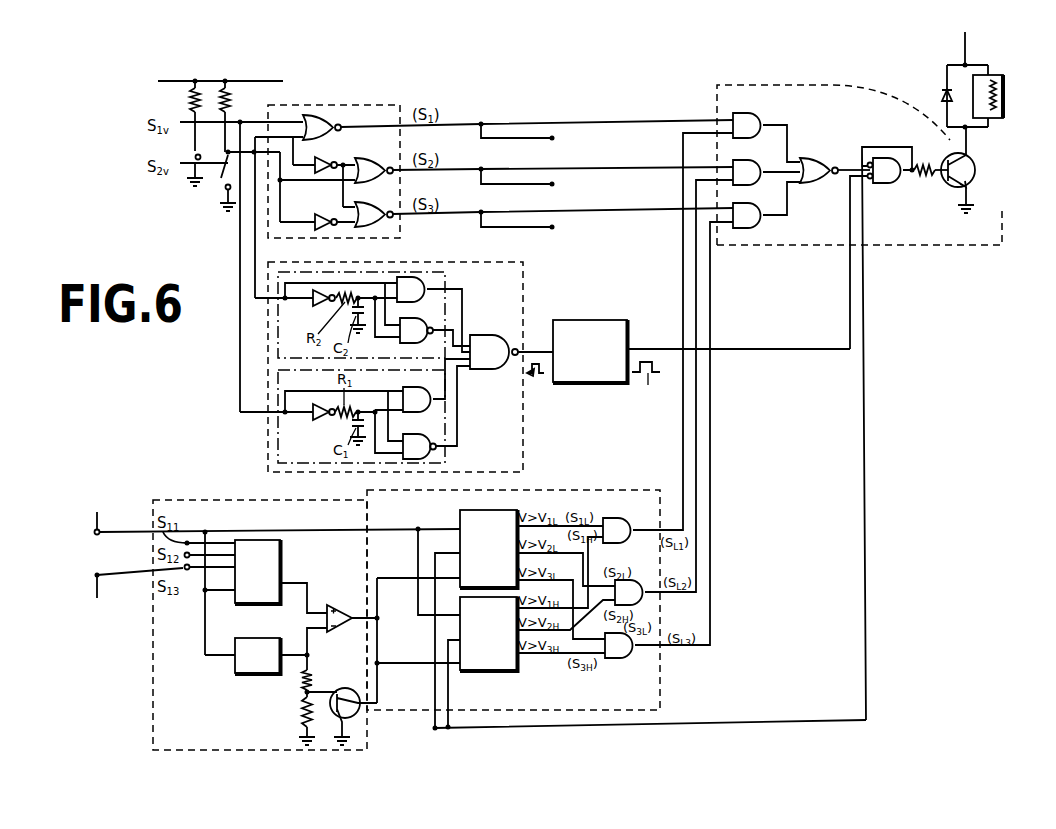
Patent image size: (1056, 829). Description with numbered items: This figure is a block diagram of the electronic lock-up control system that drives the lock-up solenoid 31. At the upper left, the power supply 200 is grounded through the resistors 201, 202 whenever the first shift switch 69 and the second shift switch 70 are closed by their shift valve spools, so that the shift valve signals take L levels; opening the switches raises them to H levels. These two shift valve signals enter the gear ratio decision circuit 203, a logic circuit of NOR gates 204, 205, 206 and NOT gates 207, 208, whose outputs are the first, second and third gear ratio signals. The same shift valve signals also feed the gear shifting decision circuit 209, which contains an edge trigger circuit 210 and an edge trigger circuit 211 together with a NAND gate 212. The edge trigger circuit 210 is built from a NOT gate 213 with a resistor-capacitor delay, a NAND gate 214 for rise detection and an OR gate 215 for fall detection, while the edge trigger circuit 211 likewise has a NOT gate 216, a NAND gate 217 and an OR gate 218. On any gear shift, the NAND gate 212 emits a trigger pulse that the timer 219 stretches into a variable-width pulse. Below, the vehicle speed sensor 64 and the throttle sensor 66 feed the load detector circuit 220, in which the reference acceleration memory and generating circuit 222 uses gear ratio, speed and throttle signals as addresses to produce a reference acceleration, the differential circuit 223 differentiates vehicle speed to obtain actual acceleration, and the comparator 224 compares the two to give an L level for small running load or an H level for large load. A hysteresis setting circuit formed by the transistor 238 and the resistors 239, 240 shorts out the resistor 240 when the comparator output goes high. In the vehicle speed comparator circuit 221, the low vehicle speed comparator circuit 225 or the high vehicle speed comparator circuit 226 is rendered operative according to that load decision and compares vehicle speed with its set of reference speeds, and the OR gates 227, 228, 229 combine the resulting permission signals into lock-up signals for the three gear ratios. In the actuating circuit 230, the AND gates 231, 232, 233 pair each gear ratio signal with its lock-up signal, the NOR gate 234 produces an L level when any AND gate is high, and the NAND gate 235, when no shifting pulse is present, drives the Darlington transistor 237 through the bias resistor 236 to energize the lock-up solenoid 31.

The lock-up solenoid 31 is at (1006, 95).
The vehicle speed sensor 64 is at (271, 514).
The throttle sensor 66 is at (133, 589).
The 1-2 shift switch 69 is at (192, 152).
The 2-3 shift switch 70 is at (220, 180).
The power supply 200 is at (220, 70).
The resistor 201 is at (190, 98).
The resistor 202 is at (232, 101).
The gear ratio decision circuit 203 is at (335, 146).
The NOR gate 204 is at (440, 158).
The NOR gate 205 is at (380, 158).
The NOR gate 206 is at (395, 226).
The NOT gate 207 is at (337, 137).
The NOT gate 208 is at (326, 193).
The gear shifting decision circuit 209 is at (525, 263).
The edge trigger circuit 210 is at (447, 456).
The edge trigger circuit 211 is at (447, 312).
The NAND gate 212 is at (490, 370).
The NOT gate 213 is at (322, 420).
The NAND gate 214 is at (433, 427).
The OR gate 215 is at (433, 380).
The NOT gate 216 is at (318, 306).
The NAND gate 217 is at (445, 329).
The OR gate 218 is at (430, 280).
The timer 219 is at (590, 383).
The load detector circuit 220 is at (205, 499).
The vehicle speed comparator circuit 221 is at (627, 488).
The reference acceleration memory and generating circuit 222 is at (282, 549).
The differential circuit 223 is at (242, 674).
The comparator 224 is at (345, 633).
The low vehicle speed comparator circuit 225 is at (514, 510).
The high vehicle speed comparator circuit 226 is at (519, 665).
The OR gate 227 is at (605, 522).
The OR gate 228 is at (648, 598).
The OR gate 229 is at (623, 658).
The actuating circuit 230 is at (918, 246).
The AND gate 231 is at (763, 116).
The AND gate 232 is at (766, 162).
The AND gate 233 is at (765, 226).
The NOR gate 234 is at (823, 158).
The NAND gate 235 is at (890, 185).
The bias resistor 236 is at (925, 182).
The Darlington transistor 237 is at (983, 170).
The transistor 238 is at (362, 728).
The resistor 239 is at (304, 683).
The resistor 240 is at (304, 718).